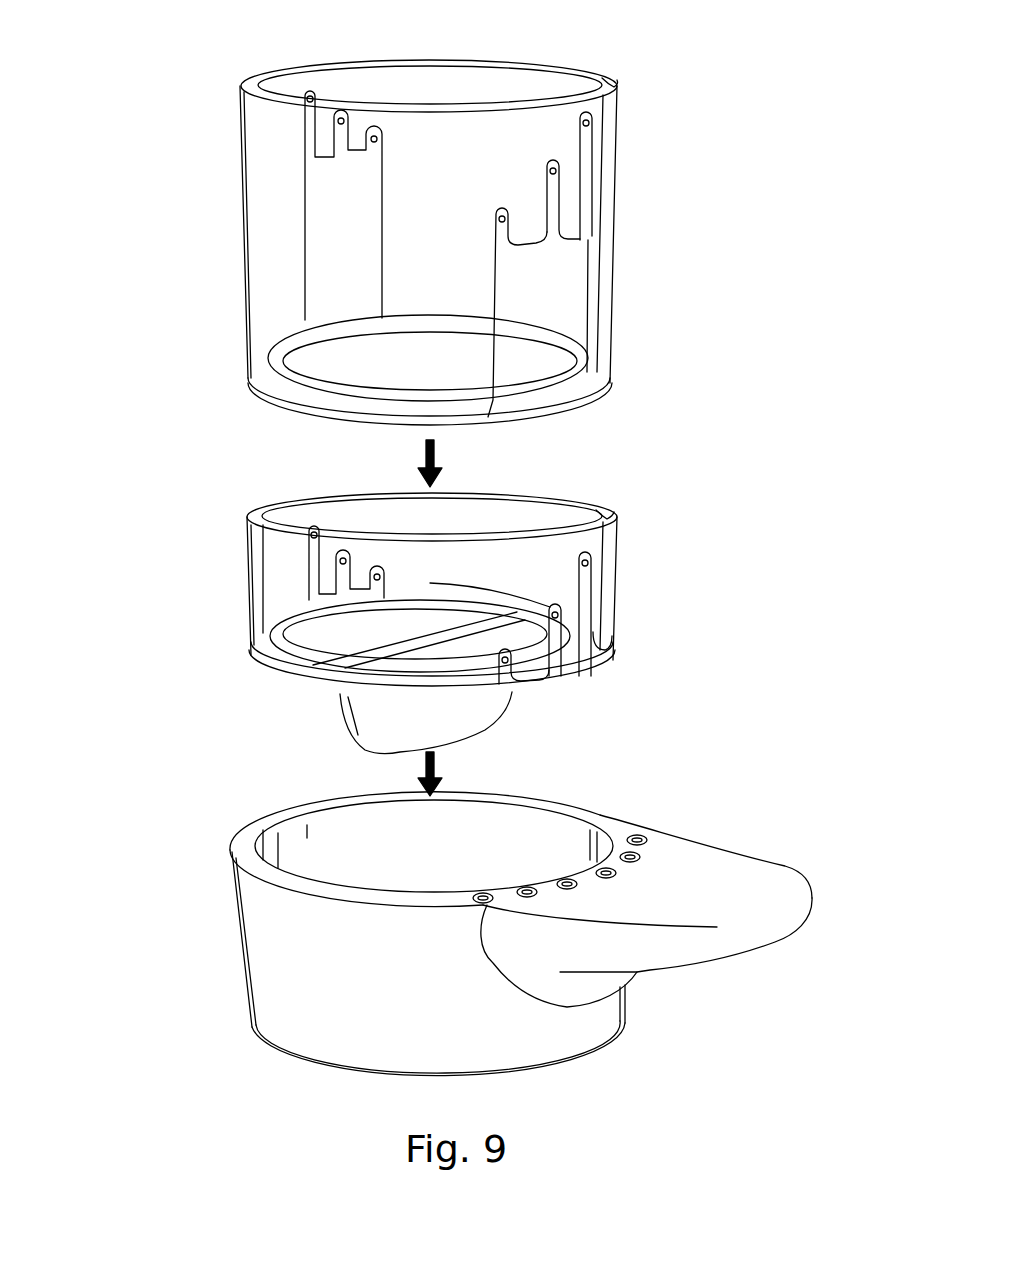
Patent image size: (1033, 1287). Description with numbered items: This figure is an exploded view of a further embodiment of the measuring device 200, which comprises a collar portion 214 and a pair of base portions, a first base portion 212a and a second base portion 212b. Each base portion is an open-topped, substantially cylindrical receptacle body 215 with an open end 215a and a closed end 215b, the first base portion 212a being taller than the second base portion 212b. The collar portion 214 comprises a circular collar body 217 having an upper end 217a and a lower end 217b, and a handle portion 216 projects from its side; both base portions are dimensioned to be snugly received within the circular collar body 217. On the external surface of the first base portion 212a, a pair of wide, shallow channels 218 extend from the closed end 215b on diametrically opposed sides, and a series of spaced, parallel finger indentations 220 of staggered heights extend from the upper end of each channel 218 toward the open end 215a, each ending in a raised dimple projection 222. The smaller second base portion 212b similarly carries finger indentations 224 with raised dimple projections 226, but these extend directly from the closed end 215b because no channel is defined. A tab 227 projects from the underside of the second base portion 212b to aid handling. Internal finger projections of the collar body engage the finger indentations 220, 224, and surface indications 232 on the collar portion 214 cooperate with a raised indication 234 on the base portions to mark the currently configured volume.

The measuring device 200 is at (122, 80).
The first base portion 212a is at (250, 190).
The second base portion 212b is at (242, 555).
The collar portion 214 is at (247, 926).
The receptacle body 215 is at (262, 240).
The open end 215a is at (311, 38).
The closed end 215b is at (222, 415).
The handle portion 216 is at (700, 908).
The circular collar body 217 is at (270, 978).
The upper end 217a is at (246, 808).
The lower end 217b is at (278, 1077).
The channels 218 is at (353, 228).
The finger indentations 220 is at (507, 243).
The raised dimple projection 222 is at (507, 217).
The finger indentations 224 is at (507, 678).
The raised dimple projections 226 is at (509, 656).
The tab 227 is at (380, 718).
The surface indications 232 is at (605, 871).
The raised indication 234 is at (614, 86).